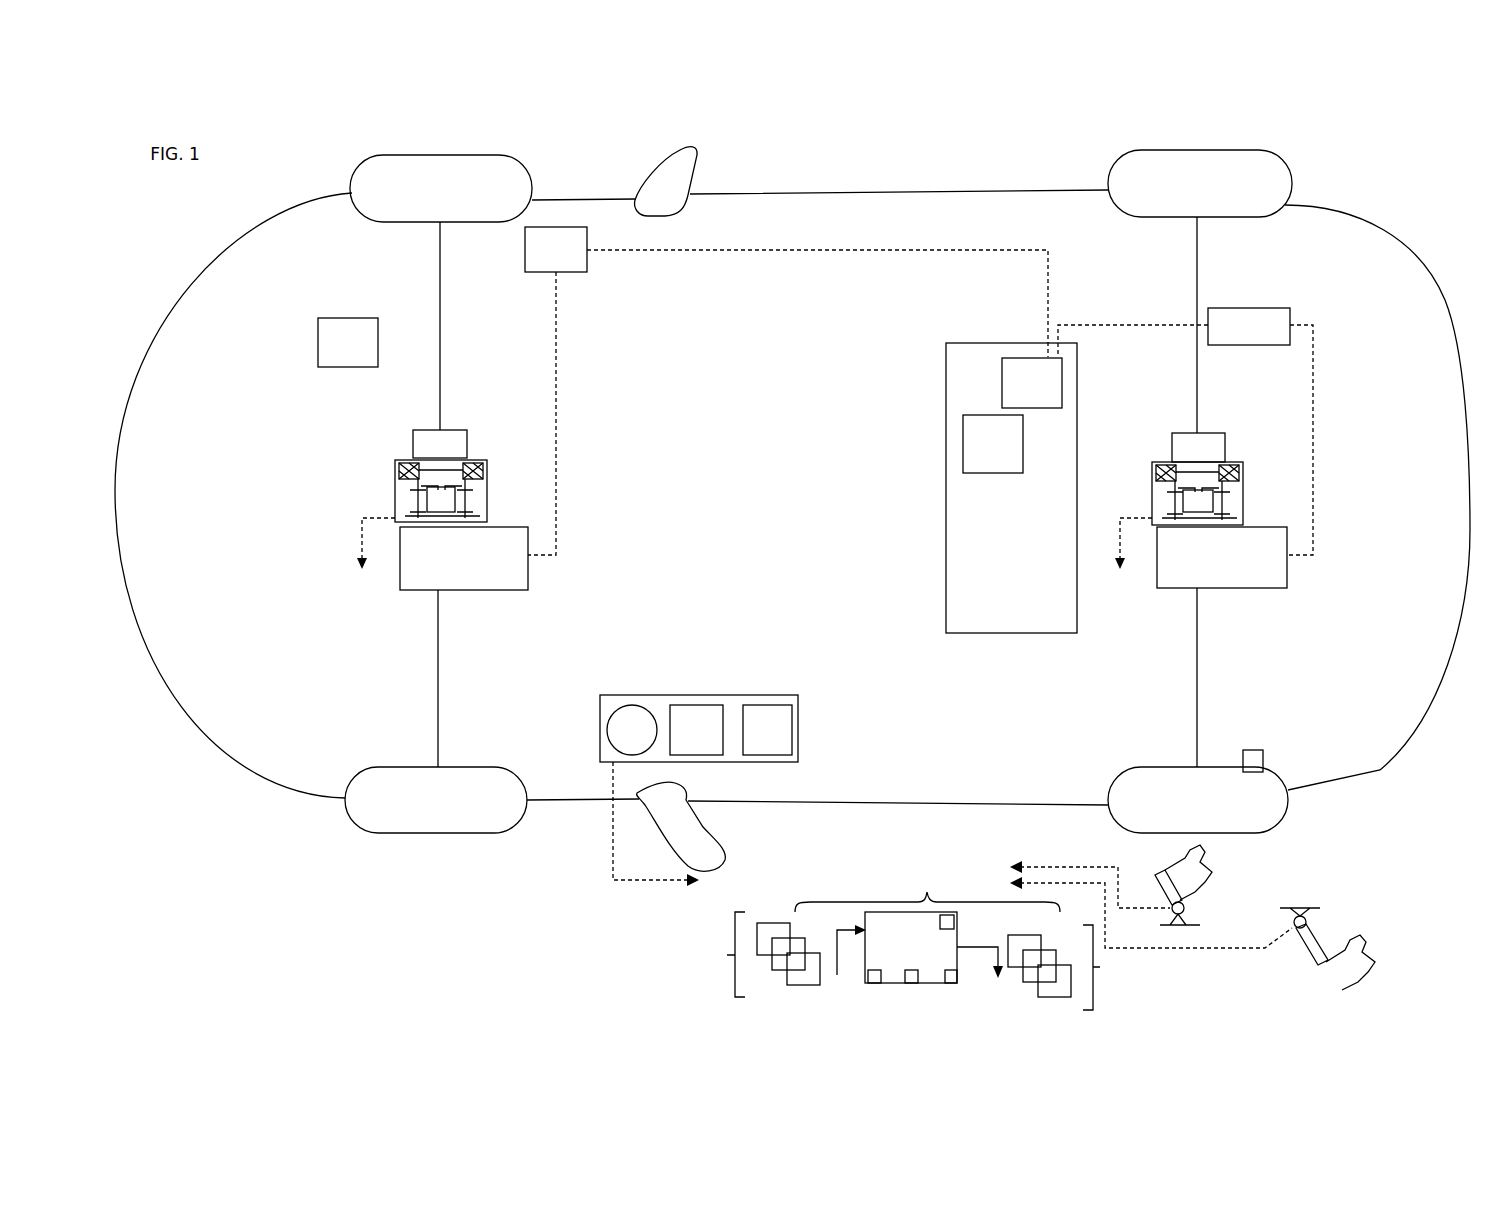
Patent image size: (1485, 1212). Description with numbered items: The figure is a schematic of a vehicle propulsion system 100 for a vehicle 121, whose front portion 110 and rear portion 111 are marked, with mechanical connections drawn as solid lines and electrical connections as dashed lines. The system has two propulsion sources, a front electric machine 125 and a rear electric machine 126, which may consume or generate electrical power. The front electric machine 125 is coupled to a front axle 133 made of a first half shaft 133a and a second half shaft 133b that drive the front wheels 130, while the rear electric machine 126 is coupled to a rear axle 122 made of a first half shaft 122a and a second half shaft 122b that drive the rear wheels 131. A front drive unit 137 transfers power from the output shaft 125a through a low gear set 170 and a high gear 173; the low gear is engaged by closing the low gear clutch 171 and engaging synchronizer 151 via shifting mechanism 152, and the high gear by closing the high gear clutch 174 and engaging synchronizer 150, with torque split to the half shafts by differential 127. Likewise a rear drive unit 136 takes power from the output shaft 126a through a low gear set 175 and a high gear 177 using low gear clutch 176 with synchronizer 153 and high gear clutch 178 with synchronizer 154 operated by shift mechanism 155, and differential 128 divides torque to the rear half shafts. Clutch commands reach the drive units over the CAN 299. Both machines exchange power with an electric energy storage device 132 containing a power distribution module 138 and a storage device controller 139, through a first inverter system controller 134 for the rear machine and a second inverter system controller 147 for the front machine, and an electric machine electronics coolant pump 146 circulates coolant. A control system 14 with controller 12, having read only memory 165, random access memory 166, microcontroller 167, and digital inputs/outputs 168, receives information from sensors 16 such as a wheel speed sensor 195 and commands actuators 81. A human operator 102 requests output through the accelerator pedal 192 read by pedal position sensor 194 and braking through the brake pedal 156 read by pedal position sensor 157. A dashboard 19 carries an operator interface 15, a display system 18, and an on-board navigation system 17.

The vehicle propulsion system 100 is at (938, 165).
The front portion 110 is at (138, 294).
The rear portion 111 is at (1425, 228).
The vehicle 121 is at (1412, 790).
The front wheels 130 is at (456, 155).
The rear wheels 131 is at (1238, 150).
The front axle 133 is at (398, 622).
The first half shaft 133a is at (441, 312).
The second half shaft 133b is at (436, 656).
The rear axle 122 is at (1238, 296).
The first half shaft 122a is at (1199, 264).
The second half shaft 122b is at (1199, 690).
The electric machine electronics coolant pump 146 is at (348, 342).
The second inverter system controller 147 is at (786, 391).
The first inverter system controller 134 is at (1185, 431).
The differential 127 is at (440, 444).
The differential 128 is at (1198, 447).
The low gear set 170 is at (390, 470).
The high gear 173 is at (490, 470).
The low gear set 175 is at (1147, 472).
The high gear 177 is at (1247, 472).
The synchronizer 151 is at (398, 488).
The synchronizer 150 is at (482, 488).
The synchronizer 153 is at (1155, 490).
The synchronizer 154 is at (1238, 490).
The low gear clutch 171 is at (390, 505).
The high gear clutch 174 is at (488, 507).
The low gear clutch 176 is at (1147, 507).
The high gear clutch 178 is at (1246, 509).
The shifting mechanism 152 is at (441, 499).
The shift mechanism 155 is at (1198, 501).
The front electric machine 125 is at (464, 558).
The output shaft 125a is at (438, 522).
The rear electric machine 126 is at (1222, 557).
The output shaft 126a is at (1196, 522).
The CAN 299 is at (752, 561).
The front drive unit 137 is at (560, 572).
The rear drive unit 136 is at (1322, 575).
The electric energy storage device 132 is at (1011, 488).
The power distribution module 138 is at (1032, 383).
The electric energy storage device controller 139 is at (993, 444).
The dashboard 19 is at (730, 696).
The operator interface 15 is at (632, 730).
The display system 18 is at (696, 730).
The on-board navigation system 17 is at (767, 730).
The wheel speed sensor 195 is at (1258, 750).
The control system 14 is at (927, 880).
The controller 12 is at (920, 947).
The sensors 16 is at (738, 954).
The actuators 81 is at (1092, 967).
The non-transitory memory 165 is at (874, 983).
The random access memory 166 is at (911, 983).
The microcontroller 167 is at (951, 983).
The digital inputs/outputs 168 is at (955, 922).
The pedal 192 is at (1172, 905).
The pedal position sensor 194 is at (1186, 909).
The human operator 102 is at (1366, 936).
The pedal position sensor 157 is at (1294, 920).
The brake pedal 156 is at (1320, 966).